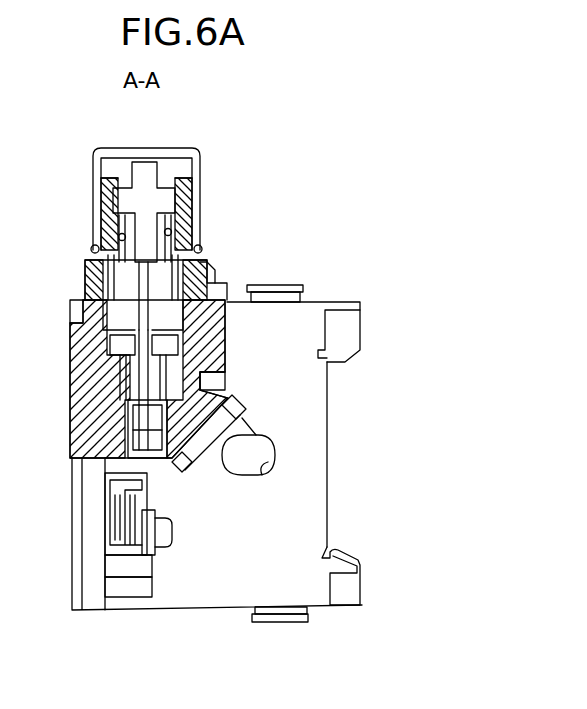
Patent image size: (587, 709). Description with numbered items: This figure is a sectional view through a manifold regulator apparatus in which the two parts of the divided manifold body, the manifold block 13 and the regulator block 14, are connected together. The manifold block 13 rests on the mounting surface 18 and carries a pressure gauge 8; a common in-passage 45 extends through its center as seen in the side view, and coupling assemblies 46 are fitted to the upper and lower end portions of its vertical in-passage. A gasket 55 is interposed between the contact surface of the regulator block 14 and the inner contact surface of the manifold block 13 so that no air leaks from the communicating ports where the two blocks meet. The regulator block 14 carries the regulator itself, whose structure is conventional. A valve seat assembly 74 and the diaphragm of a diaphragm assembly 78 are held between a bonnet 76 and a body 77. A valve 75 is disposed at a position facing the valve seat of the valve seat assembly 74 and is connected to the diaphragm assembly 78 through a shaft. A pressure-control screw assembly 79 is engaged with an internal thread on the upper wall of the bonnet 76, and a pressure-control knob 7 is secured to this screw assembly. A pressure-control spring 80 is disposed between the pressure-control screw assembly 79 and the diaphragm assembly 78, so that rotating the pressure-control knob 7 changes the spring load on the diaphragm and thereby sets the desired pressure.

The pressure-control knob 7 is at (121, 162).
The pressure-control screw assembly 79 is at (110, 215).
The pressure-control spring 80 is at (87, 278).
The bonnet 76 is at (205, 274).
The regulator block 14 is at (208, 272).
The valve seat assembly 74 is at (88, 353).
The valve 75 is at (112, 407).
The body 77 is at (76, 443).
The diaphragm assembly 78 is at (226, 352).
The pressure gauge 8 is at (92, 524).
The coupling assemblies 46 is at (305, 286).
The gasket 55 is at (238, 404).
The mounting surface 18 is at (329, 432).
The common in-passage 45 is at (258, 461).
The manifold block 13 is at (325, 520).